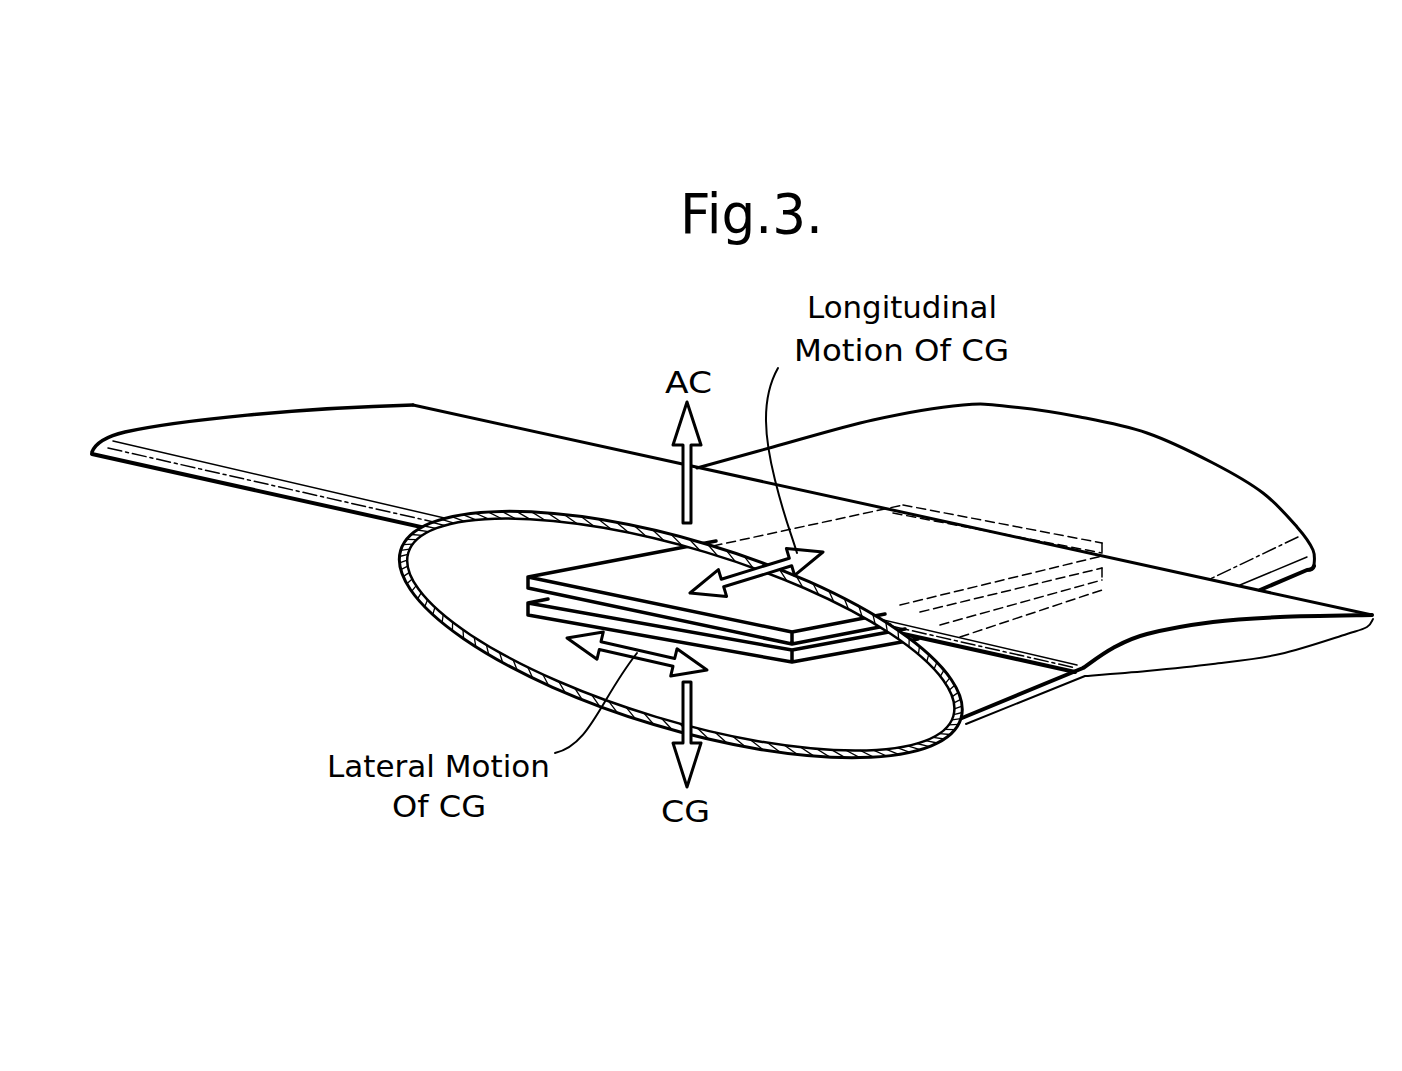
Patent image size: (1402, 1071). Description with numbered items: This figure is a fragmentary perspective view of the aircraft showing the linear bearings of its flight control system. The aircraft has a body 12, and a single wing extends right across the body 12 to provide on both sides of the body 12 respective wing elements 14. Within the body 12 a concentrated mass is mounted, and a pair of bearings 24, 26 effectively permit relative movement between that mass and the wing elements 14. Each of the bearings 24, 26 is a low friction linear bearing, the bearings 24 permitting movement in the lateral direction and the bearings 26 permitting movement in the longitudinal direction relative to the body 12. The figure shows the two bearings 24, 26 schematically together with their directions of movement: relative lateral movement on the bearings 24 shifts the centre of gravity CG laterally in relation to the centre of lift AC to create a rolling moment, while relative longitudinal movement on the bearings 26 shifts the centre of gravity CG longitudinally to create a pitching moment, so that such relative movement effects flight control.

The body 12 is at (392, 570).
The wing elements 14 is at (195, 450).
The bearing 24 is at (530, 605).
The bearing 26 is at (770, 636).